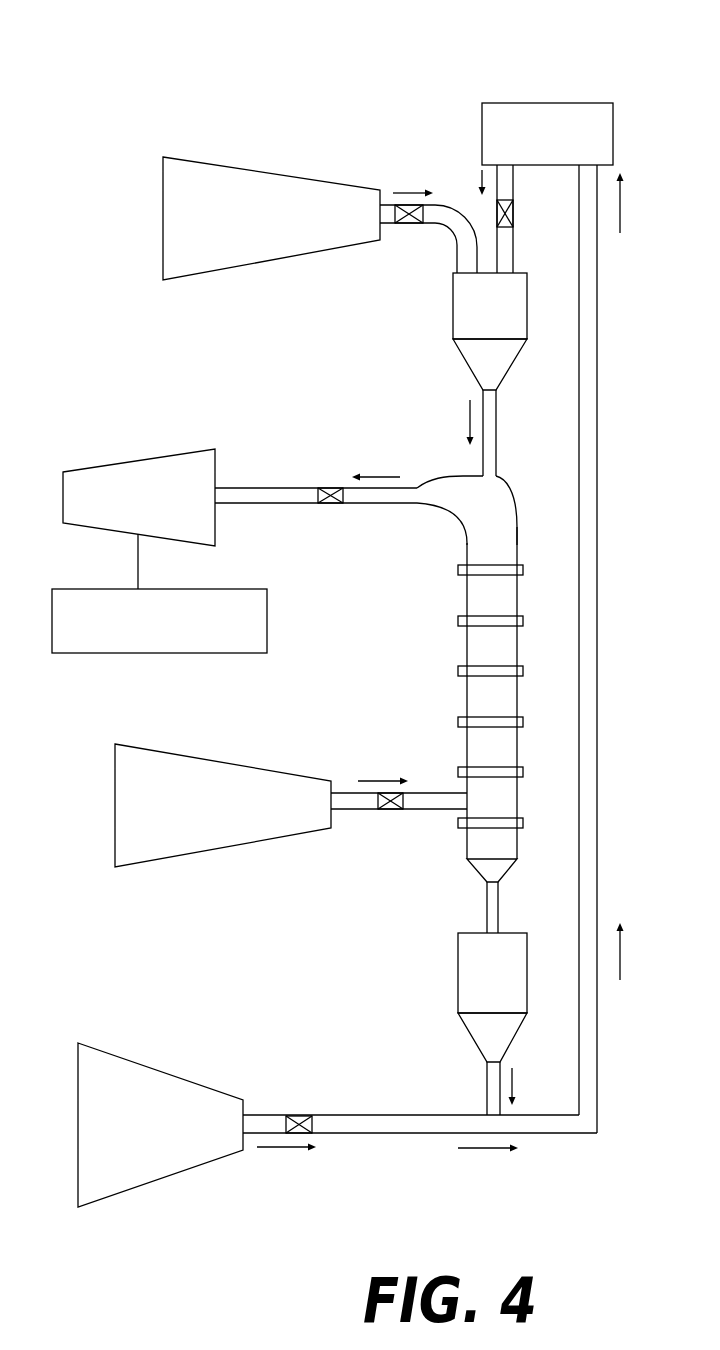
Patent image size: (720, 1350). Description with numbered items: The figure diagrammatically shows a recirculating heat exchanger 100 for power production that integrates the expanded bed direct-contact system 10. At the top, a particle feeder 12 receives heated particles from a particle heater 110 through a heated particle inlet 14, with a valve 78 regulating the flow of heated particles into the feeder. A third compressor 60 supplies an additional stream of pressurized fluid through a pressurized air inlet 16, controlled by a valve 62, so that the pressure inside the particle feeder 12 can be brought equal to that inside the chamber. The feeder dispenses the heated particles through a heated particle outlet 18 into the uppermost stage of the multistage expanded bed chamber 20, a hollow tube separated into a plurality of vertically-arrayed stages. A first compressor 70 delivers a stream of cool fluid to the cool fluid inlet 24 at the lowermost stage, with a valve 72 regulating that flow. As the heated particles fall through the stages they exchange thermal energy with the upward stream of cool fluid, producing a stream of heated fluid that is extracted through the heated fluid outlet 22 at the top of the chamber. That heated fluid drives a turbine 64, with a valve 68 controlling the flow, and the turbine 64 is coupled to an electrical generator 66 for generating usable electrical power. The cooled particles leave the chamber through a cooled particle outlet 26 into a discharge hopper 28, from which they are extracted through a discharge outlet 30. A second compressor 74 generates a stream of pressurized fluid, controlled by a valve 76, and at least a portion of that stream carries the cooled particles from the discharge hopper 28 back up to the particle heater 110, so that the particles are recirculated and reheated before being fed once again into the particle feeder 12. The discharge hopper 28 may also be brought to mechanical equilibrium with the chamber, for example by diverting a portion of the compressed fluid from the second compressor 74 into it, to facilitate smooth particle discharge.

The recirculating heat exchanger 100 is at (128, 109).
The expanded bed direct-contact system 10 is at (432, 444).
The particle feeder 12 is at (453, 300).
The heated particle inlet 14 is at (514, 243).
The pressurized air inlet 16 is at (443, 204).
The heated particle outlet 18 is at (497, 437).
The multistage expanded bed chamber 20 is at (518, 590).
The heated fluid outlet 22 is at (362, 504).
The cool fluid inlet 24 is at (360, 810).
The cooled particle outlet 26 is at (499, 905).
The discharge hopper 28 is at (458, 958).
The discharge outlet 30 is at (486, 1087).
The third compressor 60 is at (243, 163).
The valve 62 is at (396, 224).
The turbine 64 is at (155, 452).
The electrical generator 66 is at (98, 655).
The valve 68 is at (335, 504).
The first compressor 70 is at (230, 760).
The valve 72 is at (392, 810).
The second compressor 74 is at (180, 1075).
The valve 76 is at (298, 1113).
The valve 78 is at (514, 210).
The particle heater 110 is at (573, 102).